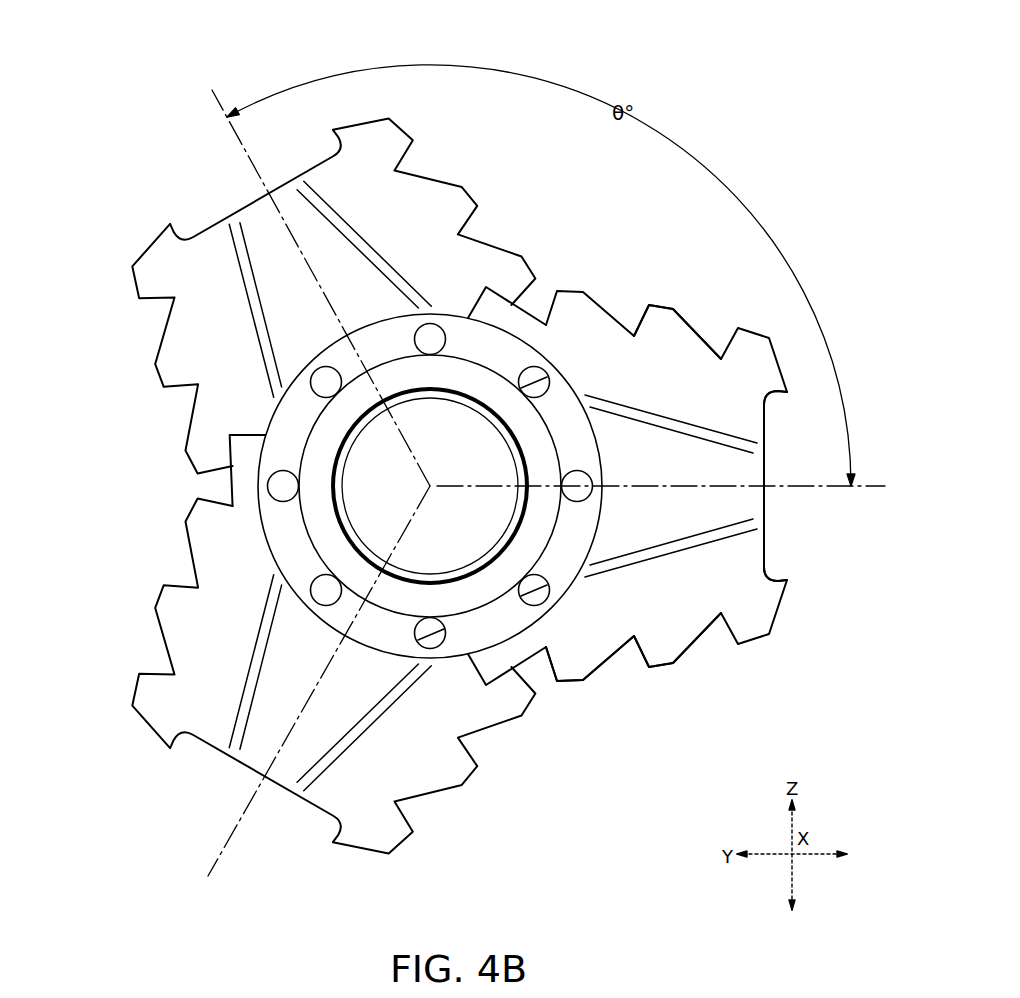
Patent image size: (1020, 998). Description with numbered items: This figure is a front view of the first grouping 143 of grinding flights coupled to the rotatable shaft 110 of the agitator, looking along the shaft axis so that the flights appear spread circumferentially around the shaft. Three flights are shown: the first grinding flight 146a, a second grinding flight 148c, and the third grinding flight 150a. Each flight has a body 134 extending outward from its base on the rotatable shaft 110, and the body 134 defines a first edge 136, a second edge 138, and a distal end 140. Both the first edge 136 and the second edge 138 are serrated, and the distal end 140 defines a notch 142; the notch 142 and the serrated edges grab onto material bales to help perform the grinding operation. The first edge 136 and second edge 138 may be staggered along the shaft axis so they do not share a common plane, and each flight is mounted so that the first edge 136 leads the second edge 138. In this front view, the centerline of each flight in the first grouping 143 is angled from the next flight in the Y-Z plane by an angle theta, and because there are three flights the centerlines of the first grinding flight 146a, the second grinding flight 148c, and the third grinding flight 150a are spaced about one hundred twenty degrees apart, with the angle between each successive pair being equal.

The rotatable shaft 110 is at (338, 522).
The body 134 is at (668, 665).
The first edge 136 is at (648, 304).
The second edge 138 is at (582, 681).
The distal end 140 is at (786, 579).
The notch 142 is at (765, 452).
The first grouping 143 is at (446, 450).
The first grinding flight 146a is at (370, 115).
The blade 148c is at (662, 492).
The third grinding flight 150a is at (130, 672).